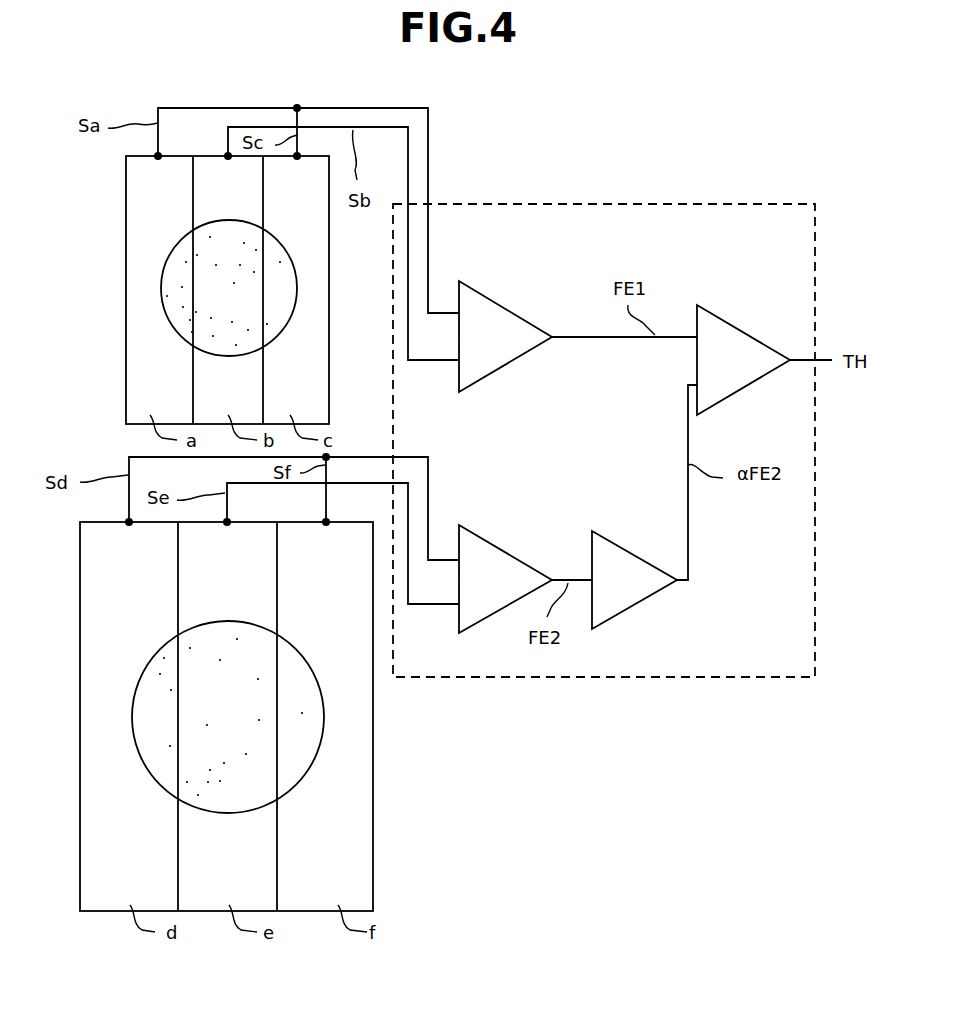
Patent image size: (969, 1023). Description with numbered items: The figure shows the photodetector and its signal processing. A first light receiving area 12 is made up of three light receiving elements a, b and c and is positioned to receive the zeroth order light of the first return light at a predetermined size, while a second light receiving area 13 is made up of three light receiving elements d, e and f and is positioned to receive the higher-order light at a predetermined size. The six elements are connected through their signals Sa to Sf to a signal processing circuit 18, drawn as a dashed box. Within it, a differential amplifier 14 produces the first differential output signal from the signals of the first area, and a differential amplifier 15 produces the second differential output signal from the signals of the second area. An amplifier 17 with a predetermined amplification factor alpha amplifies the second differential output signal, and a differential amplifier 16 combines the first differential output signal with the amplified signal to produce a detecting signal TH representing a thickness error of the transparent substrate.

The first light receiving area 12 is at (110, 204).
The second light receiving area 13 is at (106, 942).
The differential amplifier 14 is at (508, 310).
The differential amplifier 15 is at (512, 552).
The differential amplifier 16 is at (743, 333).
The amplifier 17 is at (625, 547).
The signal processing circuit 18 is at (702, 203).